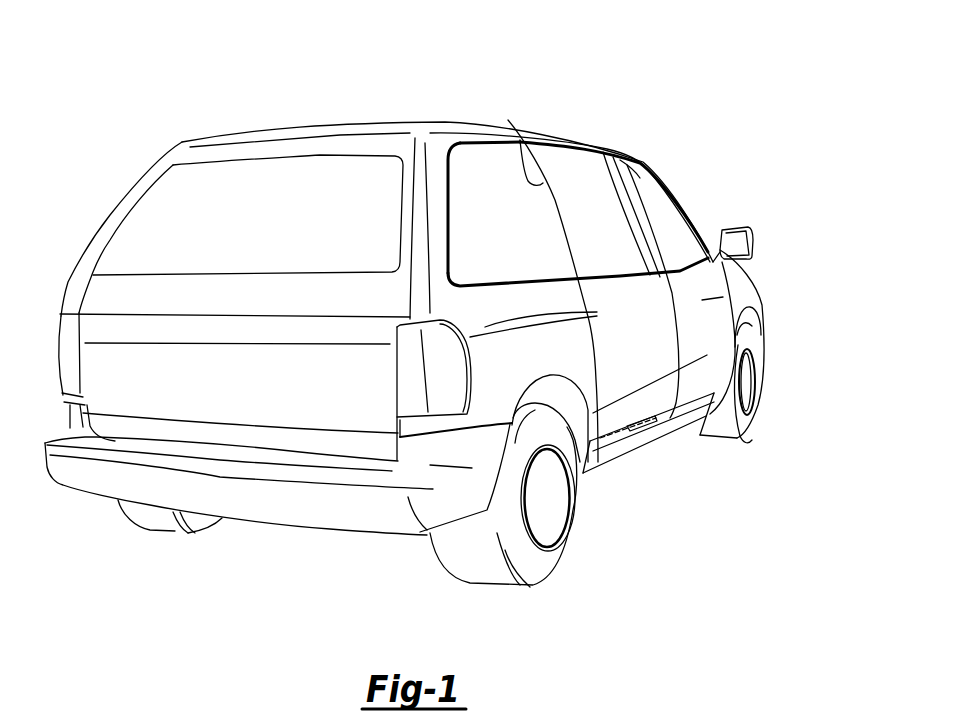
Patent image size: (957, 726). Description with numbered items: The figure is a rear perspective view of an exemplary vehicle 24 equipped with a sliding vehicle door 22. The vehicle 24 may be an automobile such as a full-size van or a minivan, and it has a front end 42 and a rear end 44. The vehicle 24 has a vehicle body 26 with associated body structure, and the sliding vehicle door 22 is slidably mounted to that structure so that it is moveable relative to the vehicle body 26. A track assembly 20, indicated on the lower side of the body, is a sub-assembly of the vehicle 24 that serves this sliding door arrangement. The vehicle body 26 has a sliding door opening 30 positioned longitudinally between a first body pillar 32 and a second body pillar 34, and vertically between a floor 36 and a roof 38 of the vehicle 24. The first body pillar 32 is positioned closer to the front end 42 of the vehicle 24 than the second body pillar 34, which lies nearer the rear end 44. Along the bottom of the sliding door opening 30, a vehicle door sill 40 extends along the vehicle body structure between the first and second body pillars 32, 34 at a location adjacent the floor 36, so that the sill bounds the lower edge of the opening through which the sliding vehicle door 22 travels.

The track assembly 20 is at (653, 445).
The sliding vehicle door 22 is at (625, 287).
The vehicle 24 is at (127, 93).
The vehicle body 26 is at (182, 141).
The sliding door opening 30 is at (677, 331).
The first body pillar 32 is at (638, 173).
The second body pillar 34 is at (517, 144).
The floor 36 is at (678, 427).
The roof 38 is at (445, 123).
The vehicle door sill 40 is at (603, 458).
The front end 42 is at (762, 293).
The rear end 44 is at (72, 256).